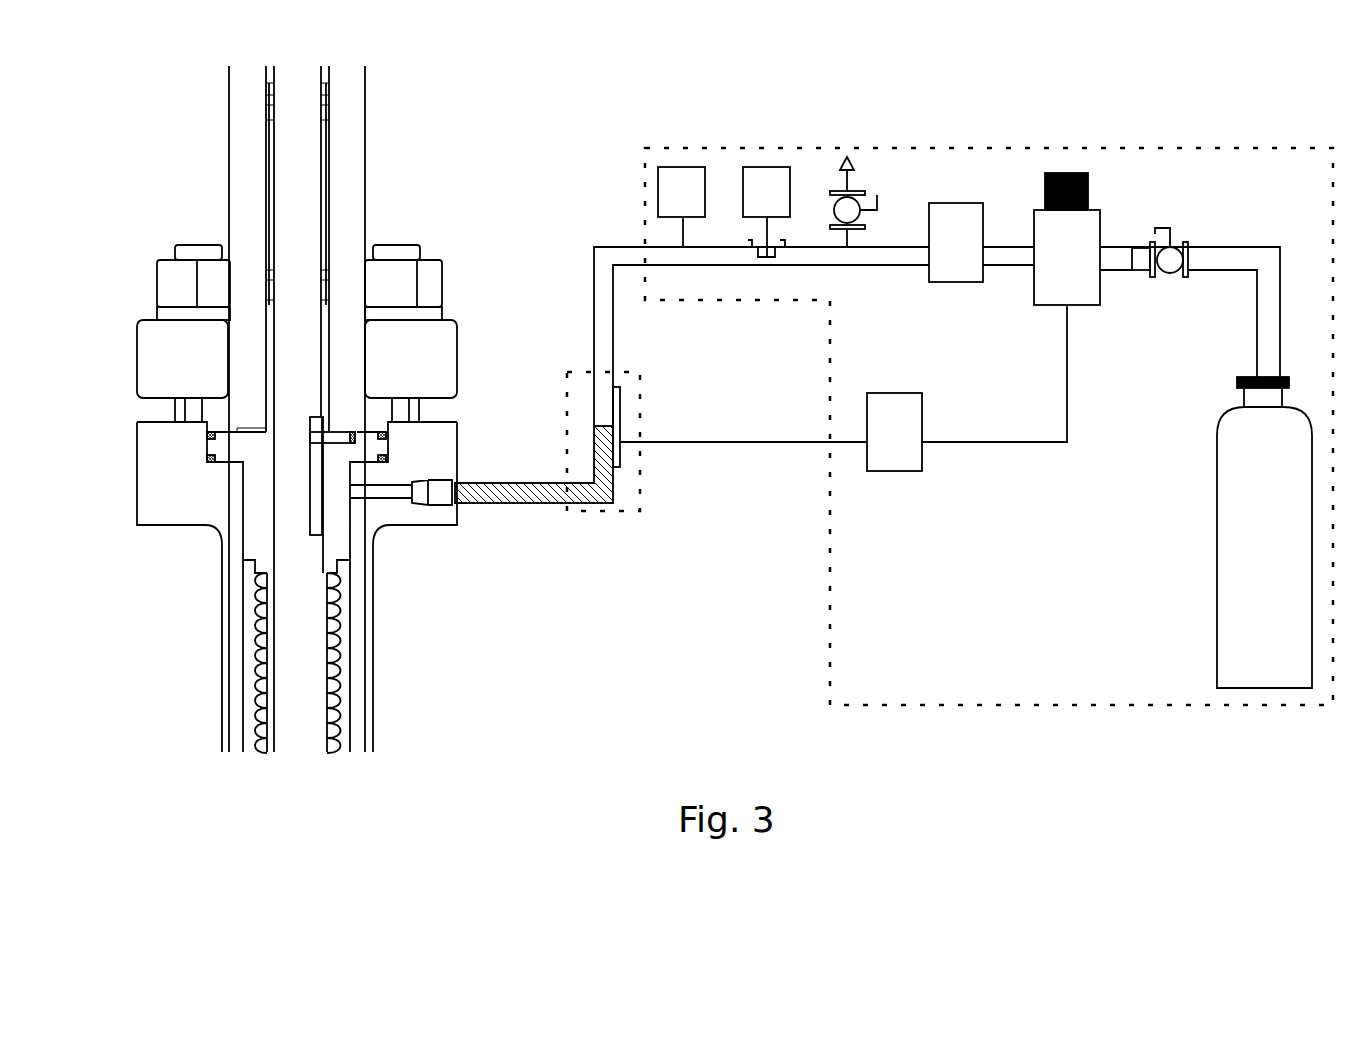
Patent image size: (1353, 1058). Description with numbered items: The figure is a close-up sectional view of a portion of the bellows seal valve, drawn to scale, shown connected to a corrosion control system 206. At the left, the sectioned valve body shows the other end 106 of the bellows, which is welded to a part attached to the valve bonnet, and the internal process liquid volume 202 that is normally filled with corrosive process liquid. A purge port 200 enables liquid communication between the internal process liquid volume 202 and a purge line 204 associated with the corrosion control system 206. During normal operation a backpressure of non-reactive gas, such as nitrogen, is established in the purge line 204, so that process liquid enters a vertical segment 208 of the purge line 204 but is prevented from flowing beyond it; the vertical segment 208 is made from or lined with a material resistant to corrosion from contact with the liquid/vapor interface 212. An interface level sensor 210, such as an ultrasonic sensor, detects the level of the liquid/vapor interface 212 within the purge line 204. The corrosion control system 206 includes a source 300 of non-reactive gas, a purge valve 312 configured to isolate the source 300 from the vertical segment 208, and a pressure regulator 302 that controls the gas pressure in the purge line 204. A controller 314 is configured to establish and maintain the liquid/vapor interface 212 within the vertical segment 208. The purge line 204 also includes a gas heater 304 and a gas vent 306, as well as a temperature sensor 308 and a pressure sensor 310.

The other end of the bellows 106 is at (258, 574).
The purge port 200 is at (455, 477).
The internal process liquid volume 202 is at (347, 588).
The purge line 204 is at (523, 505).
The corrosion control system 206 is at (1165, 148).
The vertical segment 208 is at (645, 490).
The interface level sensor 210 is at (620, 427).
The liquid/vapor interface 212 is at (606, 425).
The source of non-reactive gas 300 is at (1215, 475).
The pressure regulator 302 is at (1067, 239).
The gas heater 304 is at (950, 203).
The gas vent 306 is at (835, 205).
The temperature sensor 308 is at (758, 167).
The pressure sensor 310 is at (688, 167).
The purge valve 312 is at (1170, 277).
The controller 314 is at (890, 393).